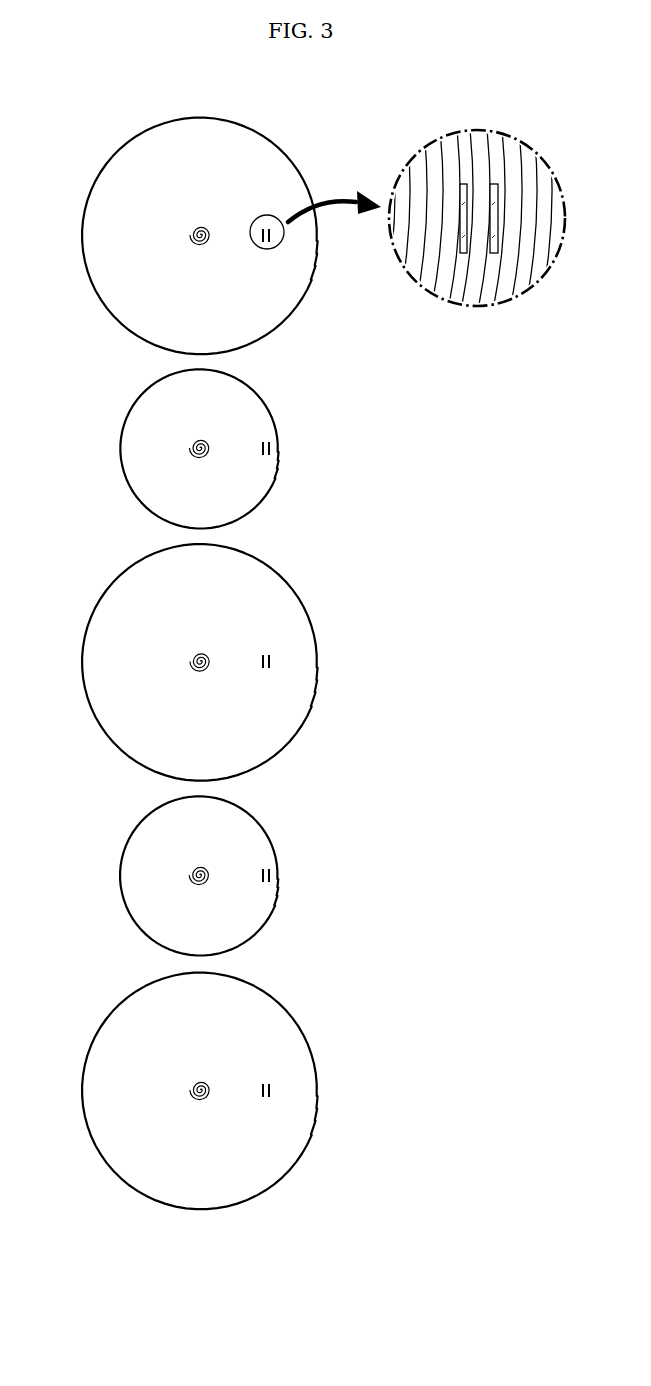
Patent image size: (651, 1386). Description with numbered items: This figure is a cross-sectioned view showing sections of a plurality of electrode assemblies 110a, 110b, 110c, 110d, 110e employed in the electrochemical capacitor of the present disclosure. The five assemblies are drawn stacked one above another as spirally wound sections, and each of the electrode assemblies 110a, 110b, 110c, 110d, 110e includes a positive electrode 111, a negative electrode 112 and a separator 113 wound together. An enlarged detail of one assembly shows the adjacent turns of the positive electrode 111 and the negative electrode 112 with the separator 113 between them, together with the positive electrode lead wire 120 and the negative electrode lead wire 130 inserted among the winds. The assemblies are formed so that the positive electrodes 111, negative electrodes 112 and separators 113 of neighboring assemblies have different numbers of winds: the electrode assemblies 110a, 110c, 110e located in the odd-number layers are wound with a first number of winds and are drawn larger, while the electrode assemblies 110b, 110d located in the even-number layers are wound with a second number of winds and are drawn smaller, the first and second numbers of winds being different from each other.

The electrode assembly 110a is at (121, 342).
The electrode assembly 110b is at (121, 512).
The electrode assembly 110c is at (121, 771).
The electrode assembly 110d is at (121, 941).
The electrode assembly 110e is at (121, 1199).
The positive electrode 111 is at (443, 145).
The negative electrode 112 is at (475, 142).
The separator 113 is at (458, 143).
The positive electrode lead wire 120 is at (464, 251).
The negative electrode lead wire 130 is at (494, 255).